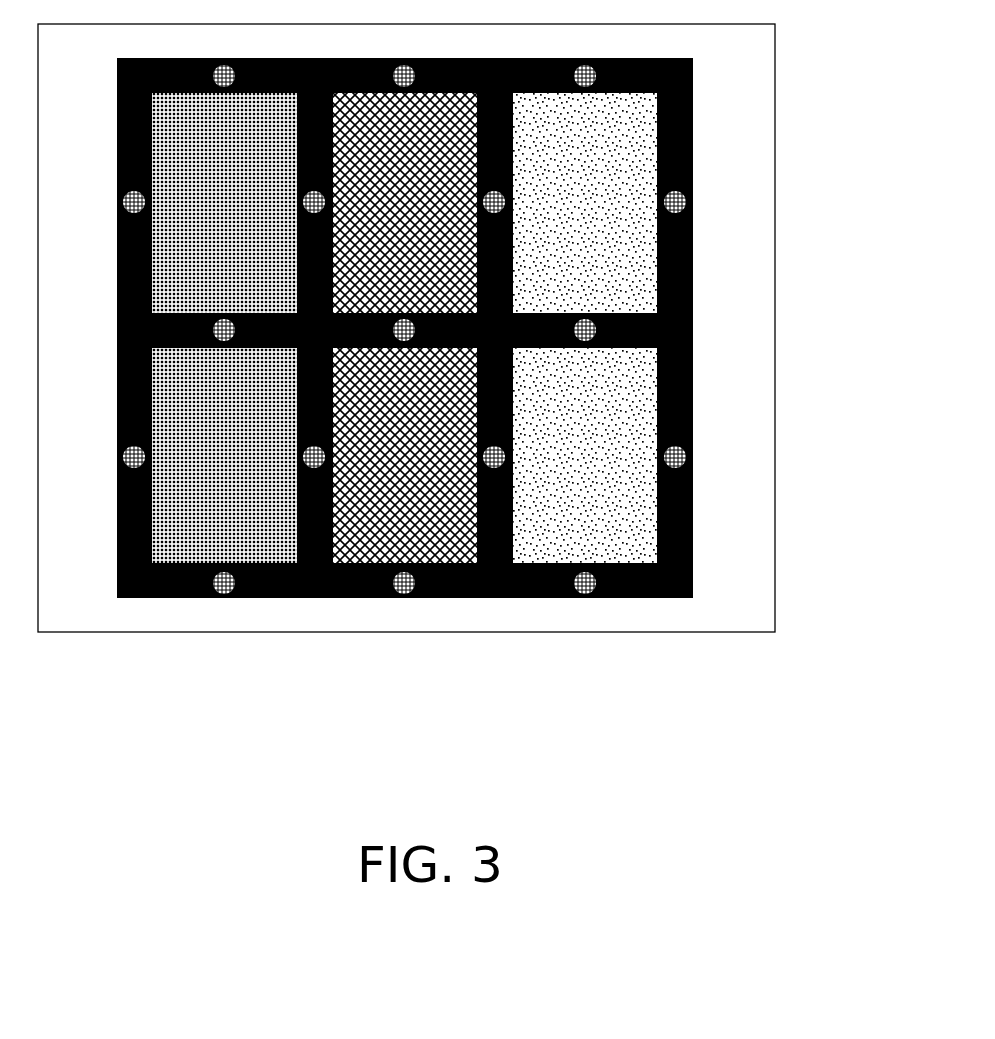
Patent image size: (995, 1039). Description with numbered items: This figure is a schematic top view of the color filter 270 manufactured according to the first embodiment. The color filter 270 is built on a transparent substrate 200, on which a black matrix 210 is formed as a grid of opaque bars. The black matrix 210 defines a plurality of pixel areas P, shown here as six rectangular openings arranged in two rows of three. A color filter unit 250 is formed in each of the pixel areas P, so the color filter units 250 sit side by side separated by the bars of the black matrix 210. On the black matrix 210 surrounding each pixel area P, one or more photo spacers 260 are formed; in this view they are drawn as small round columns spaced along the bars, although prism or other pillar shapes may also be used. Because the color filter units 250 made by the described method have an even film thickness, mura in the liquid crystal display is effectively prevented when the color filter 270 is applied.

The transparent substrate 200 is at (725, 466).
The black matrix 210 is at (693, 381).
The color filter units 250 is at (514, 328).
The photo spacers 260 is at (497, 320).
The color filter 270 is at (457, 365).
The pixel areas P is at (610, 279).